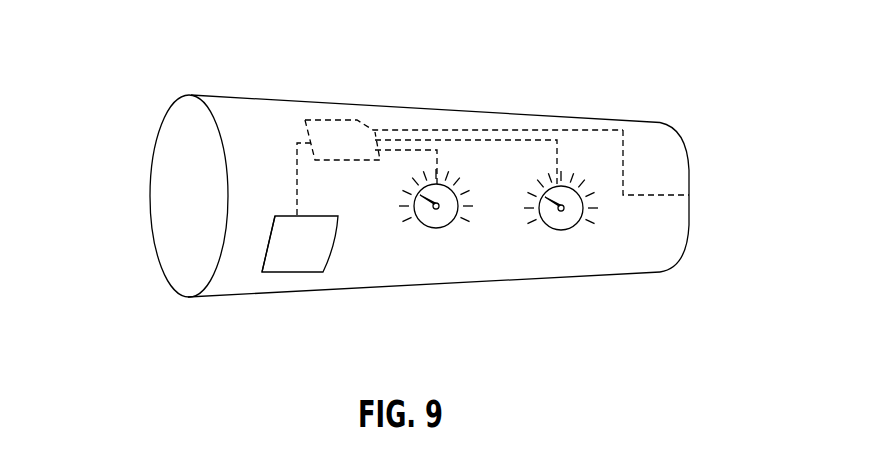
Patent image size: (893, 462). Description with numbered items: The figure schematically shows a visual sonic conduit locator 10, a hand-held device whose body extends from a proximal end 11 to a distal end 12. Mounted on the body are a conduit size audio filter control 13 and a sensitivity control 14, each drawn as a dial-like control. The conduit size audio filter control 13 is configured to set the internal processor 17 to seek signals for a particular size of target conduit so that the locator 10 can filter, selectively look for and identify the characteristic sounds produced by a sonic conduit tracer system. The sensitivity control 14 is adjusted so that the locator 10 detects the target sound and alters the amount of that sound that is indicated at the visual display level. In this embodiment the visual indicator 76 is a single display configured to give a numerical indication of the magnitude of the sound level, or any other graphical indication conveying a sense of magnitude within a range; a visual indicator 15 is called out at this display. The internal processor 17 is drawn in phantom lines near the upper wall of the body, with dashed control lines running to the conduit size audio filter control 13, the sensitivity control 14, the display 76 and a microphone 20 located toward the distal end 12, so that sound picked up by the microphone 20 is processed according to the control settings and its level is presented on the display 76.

The visual sonic conduit locator 10 is at (234, 347).
The proximal end 11 is at (116, 199).
The distal end 12 is at (700, 223).
The conduit size audio filter control 13 is at (445, 228).
The sensitivity control 14 is at (568, 232).
The visual indicator 15 is at (270, 238).
The internal processor 17 is at (342, 122).
The microphone 20 is at (623, 148).
The visual indicator 76 is at (302, 260).